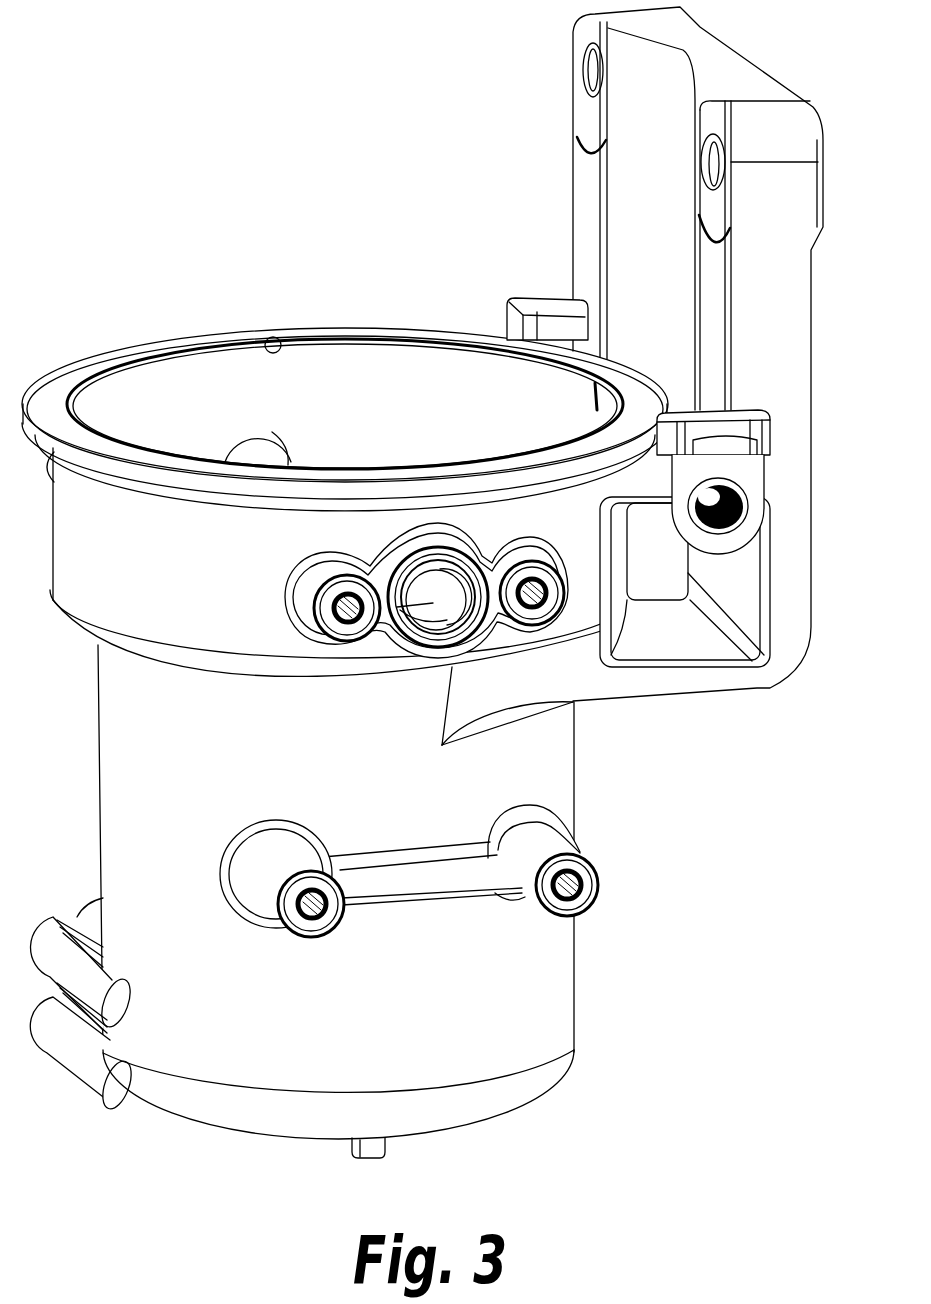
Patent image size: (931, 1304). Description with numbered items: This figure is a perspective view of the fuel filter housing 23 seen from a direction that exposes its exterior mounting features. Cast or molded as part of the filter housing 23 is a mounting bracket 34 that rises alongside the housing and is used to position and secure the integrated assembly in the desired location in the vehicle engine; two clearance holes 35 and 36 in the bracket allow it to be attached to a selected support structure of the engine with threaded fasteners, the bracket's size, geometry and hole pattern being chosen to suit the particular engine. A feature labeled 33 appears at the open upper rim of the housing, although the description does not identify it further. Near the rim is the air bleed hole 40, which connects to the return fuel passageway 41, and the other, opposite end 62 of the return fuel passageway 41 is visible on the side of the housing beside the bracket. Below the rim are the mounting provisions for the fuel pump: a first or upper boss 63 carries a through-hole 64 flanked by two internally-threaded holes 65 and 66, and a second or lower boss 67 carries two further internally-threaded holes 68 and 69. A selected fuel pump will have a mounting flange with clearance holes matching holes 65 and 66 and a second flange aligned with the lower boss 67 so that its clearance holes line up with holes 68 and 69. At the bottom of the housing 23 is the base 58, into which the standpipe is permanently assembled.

The filter housing 23 is at (150, 292).
The annular rim 33 is at (278, 338).
The mounting bracket 34 is at (740, 88).
The clearance hole 35 is at (590, 66).
The clearance hole 36 is at (713, 200).
The air bleed hole 40 is at (592, 394).
The return fuel passageway 41 is at (740, 522).
The base 58 is at (467, 1126).
The opposite end of the return fuel passageway 62 is at (745, 467).
The first or upper boss 63 is at (310, 578).
The through-hole 64 is at (433, 604).
The internally-threaded hole 65 is at (363, 622).
The internally-threaded hole 66 is at (550, 604).
The second or lower boss 67 is at (563, 917).
The internally-threaded hole 68 is at (320, 925).
The internally-threaded hole 69 is at (592, 898).